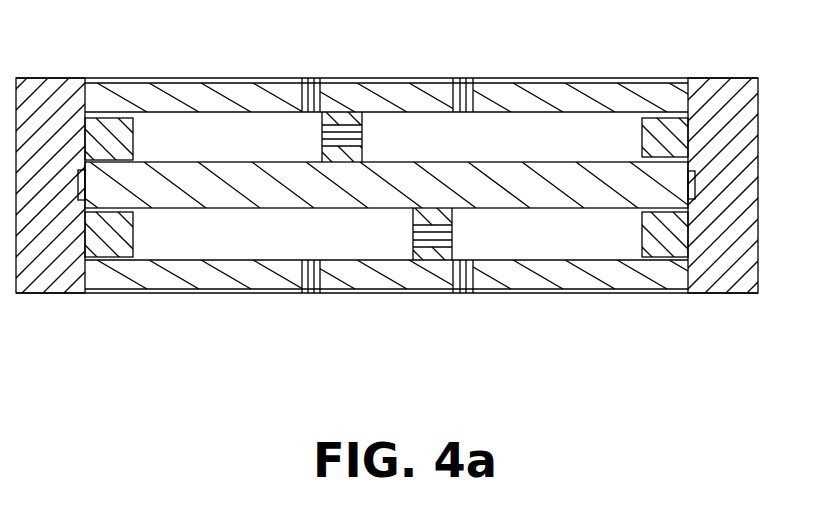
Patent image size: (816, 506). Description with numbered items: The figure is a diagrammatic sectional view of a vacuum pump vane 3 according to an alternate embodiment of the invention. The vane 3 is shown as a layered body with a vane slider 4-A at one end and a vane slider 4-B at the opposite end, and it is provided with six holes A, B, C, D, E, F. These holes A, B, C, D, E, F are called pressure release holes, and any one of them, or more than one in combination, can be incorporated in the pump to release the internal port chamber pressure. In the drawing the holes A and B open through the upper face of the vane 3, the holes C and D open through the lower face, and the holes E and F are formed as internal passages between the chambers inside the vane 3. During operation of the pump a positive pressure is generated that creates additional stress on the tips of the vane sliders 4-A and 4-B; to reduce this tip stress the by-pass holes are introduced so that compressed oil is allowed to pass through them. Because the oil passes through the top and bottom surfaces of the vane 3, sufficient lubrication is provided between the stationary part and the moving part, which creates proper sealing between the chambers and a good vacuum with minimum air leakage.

The vacuum pump vane 3 is at (550, 280).
The vane slider 4-A is at (719, 109).
The vane slider 4-B is at (63, 87).
The pressure release hole A is at (313, 68).
The pressure release hole B is at (462, 68).
The pressure release hole C is at (315, 305).
The pressure release hole D is at (462, 305).
The pressure release hole E is at (365, 134).
The pressure release hole F is at (405, 233).